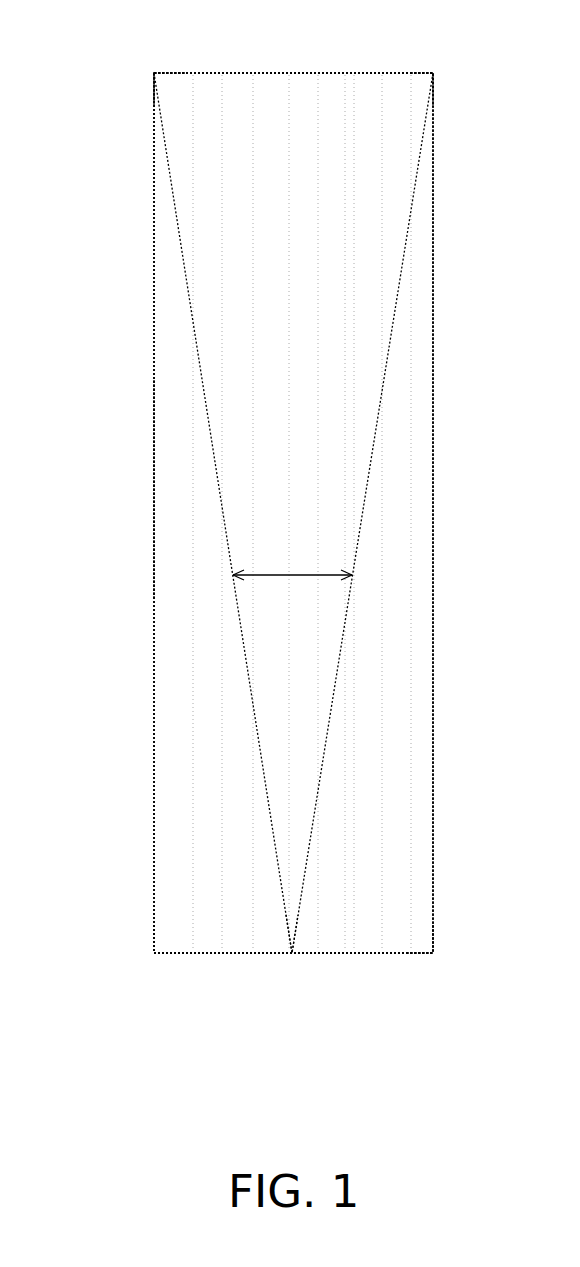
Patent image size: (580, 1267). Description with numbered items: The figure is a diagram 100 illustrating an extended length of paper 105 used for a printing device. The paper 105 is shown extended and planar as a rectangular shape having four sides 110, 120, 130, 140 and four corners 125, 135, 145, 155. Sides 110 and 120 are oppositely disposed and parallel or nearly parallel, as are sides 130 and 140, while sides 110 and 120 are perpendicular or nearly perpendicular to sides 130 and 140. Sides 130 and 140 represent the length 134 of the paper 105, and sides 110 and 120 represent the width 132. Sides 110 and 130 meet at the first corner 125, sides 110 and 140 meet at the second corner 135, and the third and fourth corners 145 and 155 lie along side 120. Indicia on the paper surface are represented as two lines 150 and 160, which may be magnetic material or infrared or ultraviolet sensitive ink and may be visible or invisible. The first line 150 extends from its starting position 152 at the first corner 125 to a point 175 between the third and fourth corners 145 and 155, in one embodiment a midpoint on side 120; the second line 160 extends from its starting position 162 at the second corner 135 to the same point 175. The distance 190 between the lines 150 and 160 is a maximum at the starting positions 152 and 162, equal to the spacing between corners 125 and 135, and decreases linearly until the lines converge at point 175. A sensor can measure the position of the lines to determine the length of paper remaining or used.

The diagram 100 is at (86, 1085).
The extended length of paper 105 is at (178, 700).
The side 110 is at (223, 73).
The side 120 is at (223, 953).
The first corner 125 is at (154, 73).
The side 130 is at (154, 294).
The width 132 is at (293, 73).
The length 134 is at (154, 514).
The second corner 135 is at (433, 73).
The side 140 is at (433, 294).
The third corner 145 is at (154, 953).
The first line 150 is at (203, 383).
The starting position 152 is at (154, 73).
The fourth corner 155 is at (433, 953).
The second line 160 is at (385, 382).
The starting position 162 is at (433, 73).
The point 175 is at (293, 955).
The distance 190 is at (295, 573).